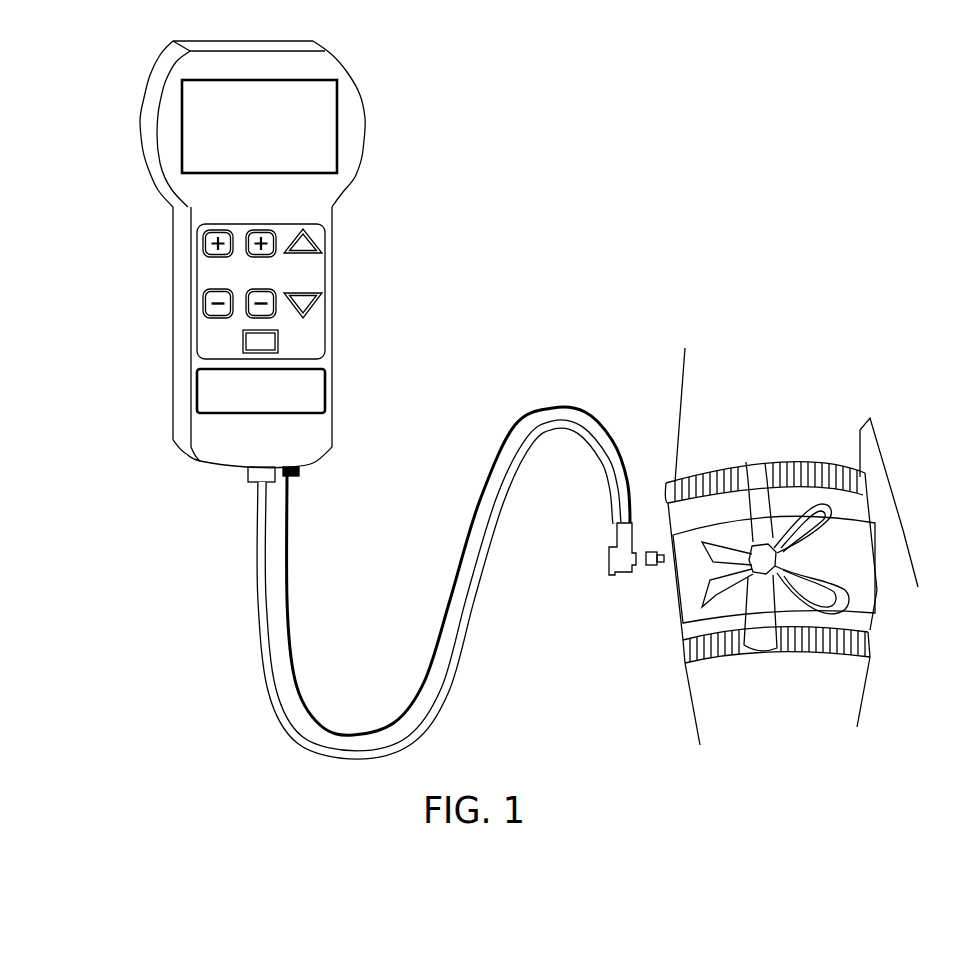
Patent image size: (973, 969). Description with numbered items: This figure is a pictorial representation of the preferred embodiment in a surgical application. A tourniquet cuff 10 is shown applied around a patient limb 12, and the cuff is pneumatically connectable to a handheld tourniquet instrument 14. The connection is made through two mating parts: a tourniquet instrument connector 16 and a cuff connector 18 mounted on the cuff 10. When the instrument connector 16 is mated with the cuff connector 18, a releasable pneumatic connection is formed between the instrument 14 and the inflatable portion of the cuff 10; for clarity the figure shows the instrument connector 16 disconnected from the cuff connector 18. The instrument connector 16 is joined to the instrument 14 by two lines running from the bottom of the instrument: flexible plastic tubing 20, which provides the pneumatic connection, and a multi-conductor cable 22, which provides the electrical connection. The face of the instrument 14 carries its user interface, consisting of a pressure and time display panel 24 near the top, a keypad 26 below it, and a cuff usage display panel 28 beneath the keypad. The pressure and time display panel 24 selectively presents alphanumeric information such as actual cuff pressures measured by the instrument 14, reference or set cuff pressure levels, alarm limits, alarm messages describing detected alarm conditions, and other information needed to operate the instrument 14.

The tourniquet cuff 10 is at (671, 620).
The patient limb 12 is at (681, 381).
The tourniquet instrument 14 is at (365, 113).
The tourniquet instrument connector 16 is at (609, 562).
The cuff connector 18 is at (655, 568).
The flexible plastic tubing 20 is at (257, 548).
The multi-conductor cable 22 is at (288, 539).
The pressure and time display panel 24 is at (337, 165).
The keypad 26 is at (325, 272).
The cuff usage display panel 28 is at (325, 386).